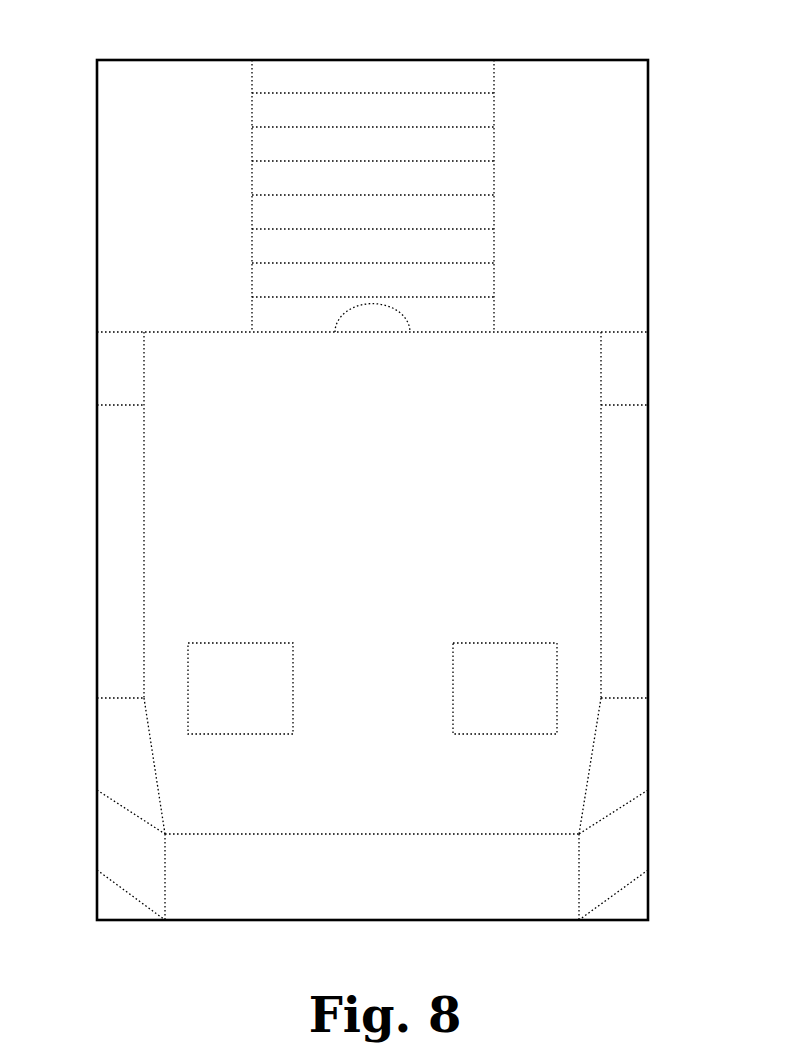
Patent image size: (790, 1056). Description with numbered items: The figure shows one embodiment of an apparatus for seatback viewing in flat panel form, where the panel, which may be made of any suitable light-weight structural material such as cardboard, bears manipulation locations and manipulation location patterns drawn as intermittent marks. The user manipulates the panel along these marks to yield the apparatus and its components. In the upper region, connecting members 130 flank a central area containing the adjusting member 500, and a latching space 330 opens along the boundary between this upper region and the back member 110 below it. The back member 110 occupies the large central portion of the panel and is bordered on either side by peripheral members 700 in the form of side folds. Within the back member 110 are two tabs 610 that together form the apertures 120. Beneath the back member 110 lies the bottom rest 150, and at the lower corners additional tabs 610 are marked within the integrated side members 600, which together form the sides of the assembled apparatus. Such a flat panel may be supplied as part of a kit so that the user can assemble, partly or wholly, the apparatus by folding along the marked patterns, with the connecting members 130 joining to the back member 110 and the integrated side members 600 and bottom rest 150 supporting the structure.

The adjusting member 500 is at (326, 107).
The connecting members 130 is at (153, 216).
The latching space 330 is at (378, 318).
The peripheral members 700 is at (104, 550).
The back member 110 is at (359, 495).
The tabs 610 is at (225, 697).
The apertures 120 is at (453, 717).
The bottom rest 150 is at (361, 888).
The integrated side members 600 is at (593, 892).